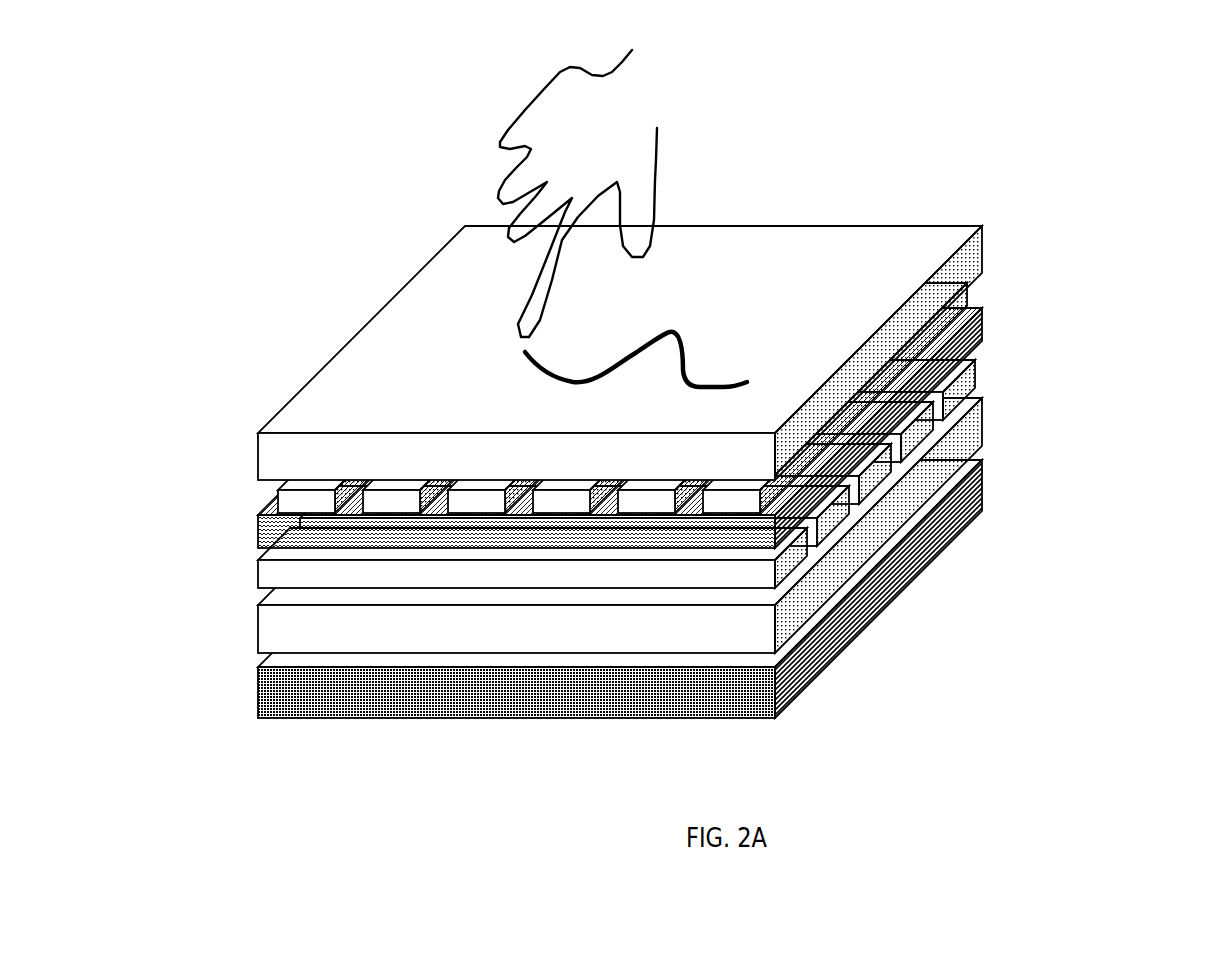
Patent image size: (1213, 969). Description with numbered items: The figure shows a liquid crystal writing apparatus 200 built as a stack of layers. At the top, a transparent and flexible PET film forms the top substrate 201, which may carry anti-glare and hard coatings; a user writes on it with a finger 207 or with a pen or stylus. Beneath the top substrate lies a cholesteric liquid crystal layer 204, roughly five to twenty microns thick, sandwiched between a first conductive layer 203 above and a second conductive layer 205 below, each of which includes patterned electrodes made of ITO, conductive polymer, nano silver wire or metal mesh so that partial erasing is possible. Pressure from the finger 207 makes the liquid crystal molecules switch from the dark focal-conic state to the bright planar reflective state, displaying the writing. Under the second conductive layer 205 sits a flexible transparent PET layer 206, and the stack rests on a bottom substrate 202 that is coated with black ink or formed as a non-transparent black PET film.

The liquid crystal writing apparatus 200 is at (719, 428).
The top substrate 201 is at (649, 348).
The bottom substrate 202 is at (655, 587).
The first conductive layer 203 is at (655, 353).
The cholesteric liquid crystal layer 204 is at (655, 415).
The second conductive layer 205 is at (655, 474).
The layer below the second conductive layer 206 is at (655, 525).
The finger 207 is at (635, 193).